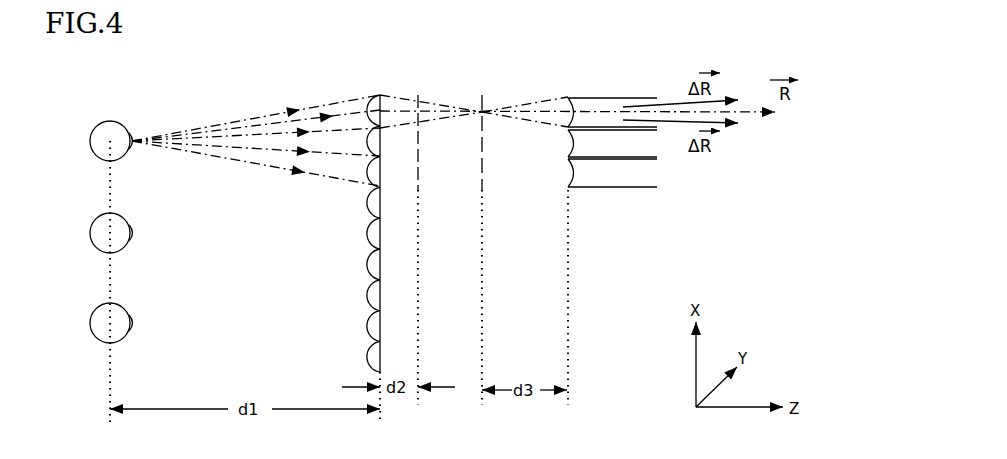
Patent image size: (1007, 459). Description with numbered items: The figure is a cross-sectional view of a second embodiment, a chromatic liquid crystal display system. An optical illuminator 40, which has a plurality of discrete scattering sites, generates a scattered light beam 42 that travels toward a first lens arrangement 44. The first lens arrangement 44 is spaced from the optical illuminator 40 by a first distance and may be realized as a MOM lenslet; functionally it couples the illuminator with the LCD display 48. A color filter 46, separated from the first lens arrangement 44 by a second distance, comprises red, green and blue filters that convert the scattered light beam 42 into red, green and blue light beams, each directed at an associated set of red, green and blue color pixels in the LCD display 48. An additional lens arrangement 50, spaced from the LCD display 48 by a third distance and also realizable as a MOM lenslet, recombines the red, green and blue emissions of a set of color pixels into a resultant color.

The optical illuminator 40 is at (100, 122).
The scattered light beam 42 is at (242, 135).
The first lens arrangement 44 is at (398, 85).
The color filter 46 is at (425, 90).
The LCD display 48 is at (487, 90).
The additional lens arrangement 50 is at (657, 85).